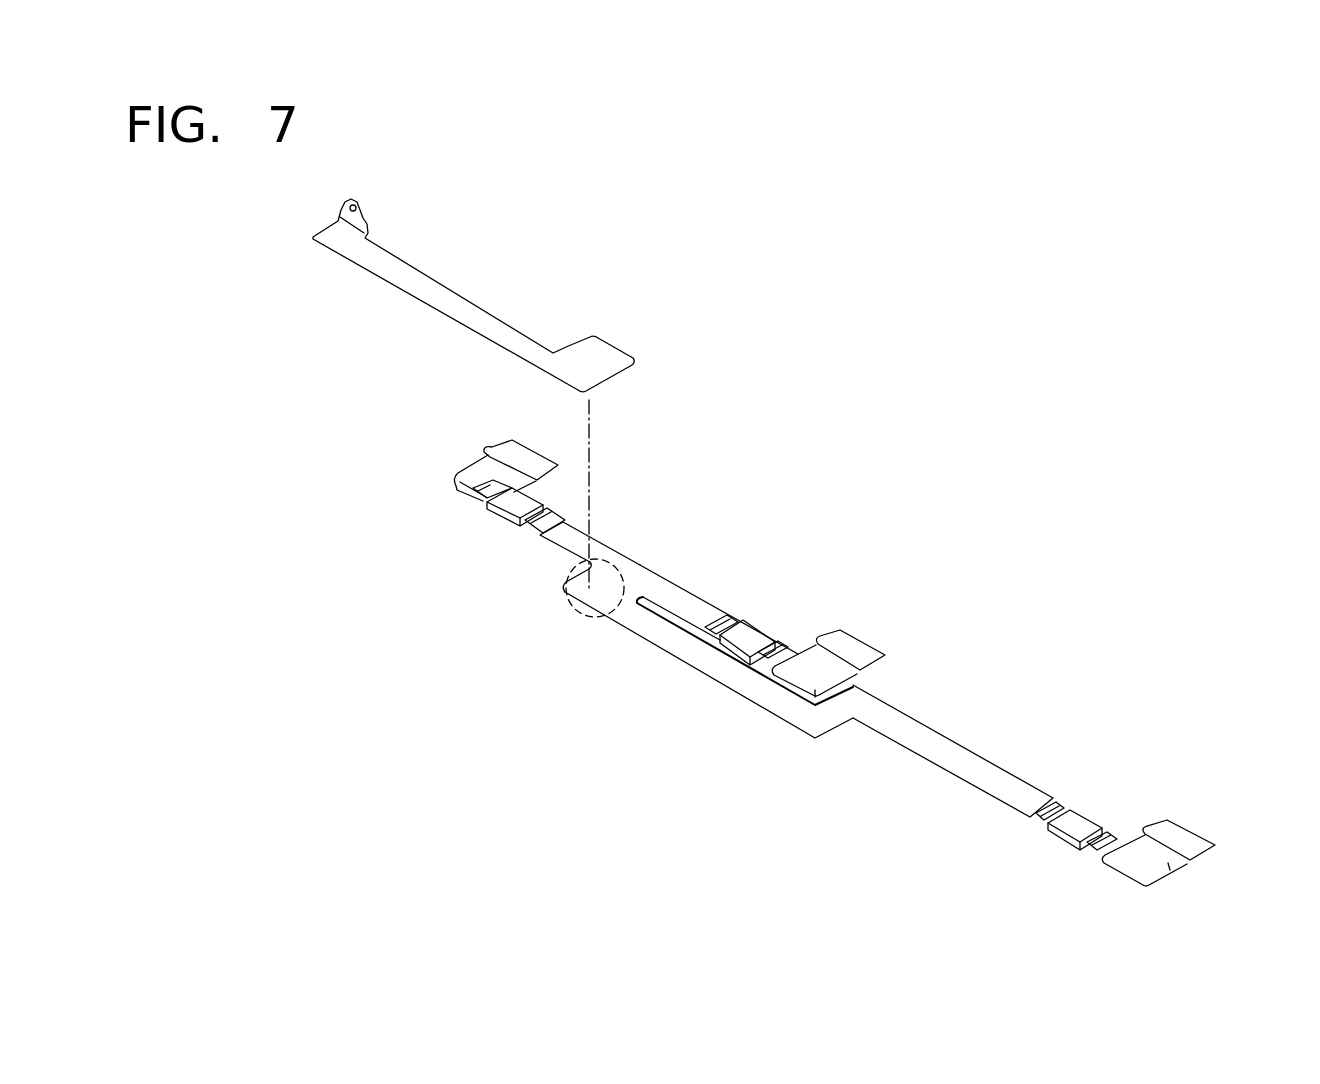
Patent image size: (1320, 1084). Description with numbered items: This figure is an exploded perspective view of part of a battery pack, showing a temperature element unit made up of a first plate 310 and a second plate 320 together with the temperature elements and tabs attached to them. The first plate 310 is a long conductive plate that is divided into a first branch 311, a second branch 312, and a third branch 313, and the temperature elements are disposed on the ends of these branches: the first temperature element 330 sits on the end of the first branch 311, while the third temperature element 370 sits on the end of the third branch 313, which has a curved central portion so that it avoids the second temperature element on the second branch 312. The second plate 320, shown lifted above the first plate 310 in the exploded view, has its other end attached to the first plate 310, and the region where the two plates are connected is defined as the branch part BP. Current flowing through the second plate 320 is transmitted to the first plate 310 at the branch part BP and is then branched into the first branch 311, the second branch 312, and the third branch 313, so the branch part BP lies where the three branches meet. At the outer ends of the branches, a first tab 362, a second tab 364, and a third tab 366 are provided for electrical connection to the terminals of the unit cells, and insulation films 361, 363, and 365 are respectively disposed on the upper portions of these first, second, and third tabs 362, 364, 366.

The first plate 310 is at (802, 633).
The first branch 311 is at (598, 532).
The second branch 312 is at (693, 594).
The third branch 313 is at (958, 741).
The second plate 320 is at (466, 306).
The first temperature element 330 is at (510, 503).
The insulation film 361 is at (455, 478).
The first tab 362 is at (530, 457).
The insulation film 363 is at (860, 678).
The second tab 364 is at (860, 650).
The insulation film 365 is at (1187, 863).
The third tab 366 is at (1185, 840).
The third temperature element 370 is at (1075, 823).
The branch part BP is at (578, 601).